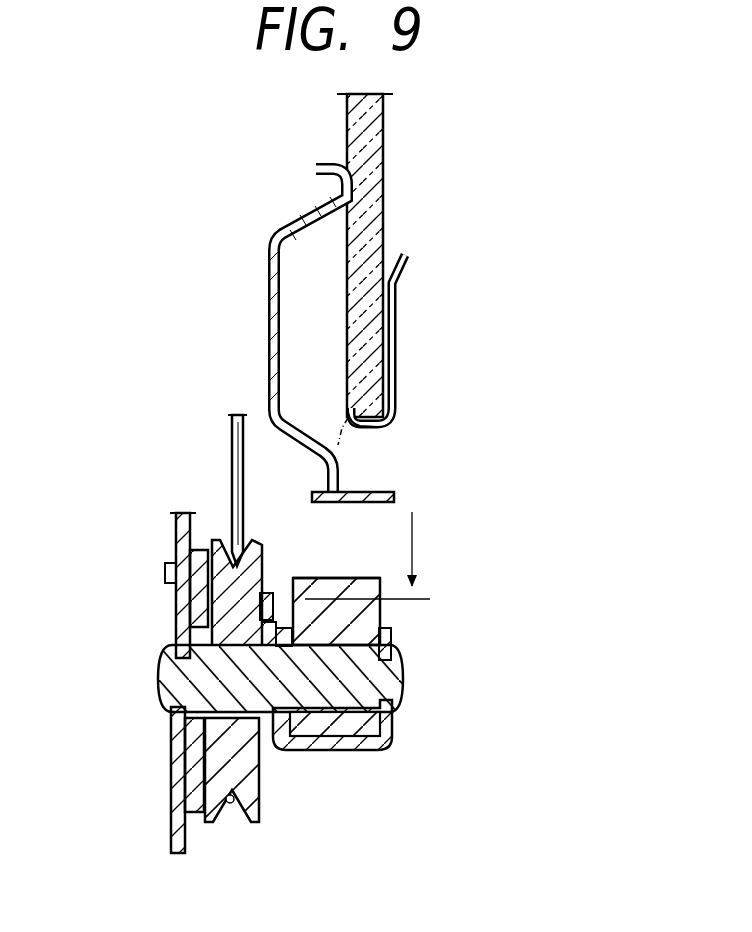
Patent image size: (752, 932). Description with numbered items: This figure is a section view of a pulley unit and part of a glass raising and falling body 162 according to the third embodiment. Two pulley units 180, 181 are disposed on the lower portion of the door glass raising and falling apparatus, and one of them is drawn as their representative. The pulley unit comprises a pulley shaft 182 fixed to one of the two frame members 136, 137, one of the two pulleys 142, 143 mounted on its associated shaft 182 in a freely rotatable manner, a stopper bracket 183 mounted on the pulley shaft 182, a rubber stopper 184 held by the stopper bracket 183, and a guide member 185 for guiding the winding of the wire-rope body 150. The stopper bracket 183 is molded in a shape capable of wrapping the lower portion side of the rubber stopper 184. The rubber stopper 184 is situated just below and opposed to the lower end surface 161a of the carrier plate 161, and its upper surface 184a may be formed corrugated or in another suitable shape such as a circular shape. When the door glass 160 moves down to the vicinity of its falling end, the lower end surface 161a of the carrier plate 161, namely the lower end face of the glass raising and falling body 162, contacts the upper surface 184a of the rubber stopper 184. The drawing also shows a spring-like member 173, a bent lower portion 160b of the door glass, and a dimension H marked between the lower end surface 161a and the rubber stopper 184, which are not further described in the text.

The door glass 160 is at (384, 127).
The carrier plate 161 is at (268, 268).
The lower end surface of the carrier plate 161a is at (356, 504).
The glass raising and falling body 162 is at (446, 212).
The spring 173 is at (399, 314).
The bent portion of bar 160b is at (383, 429).
The wire-rope body 150 is at (232, 478).
The pulley unit 180 is at (466, 631).
The pulley unit 181 is at (339, 683).
The pulley shaft 182 is at (193, 680).
The stopper bracket 183 is at (357, 750).
The rubber stopper 184 is at (382, 614).
The upper surface of the rubber stopper 184a is at (320, 578).
The guide member 185 is at (183, 744).
The frame member 136 is at (167, 787).
The frame member 137 is at (113, 683).
The pulley 142 is at (262, 800).
The pulley 143 is at (298, 786).
The height dimension H is at (376, 558).